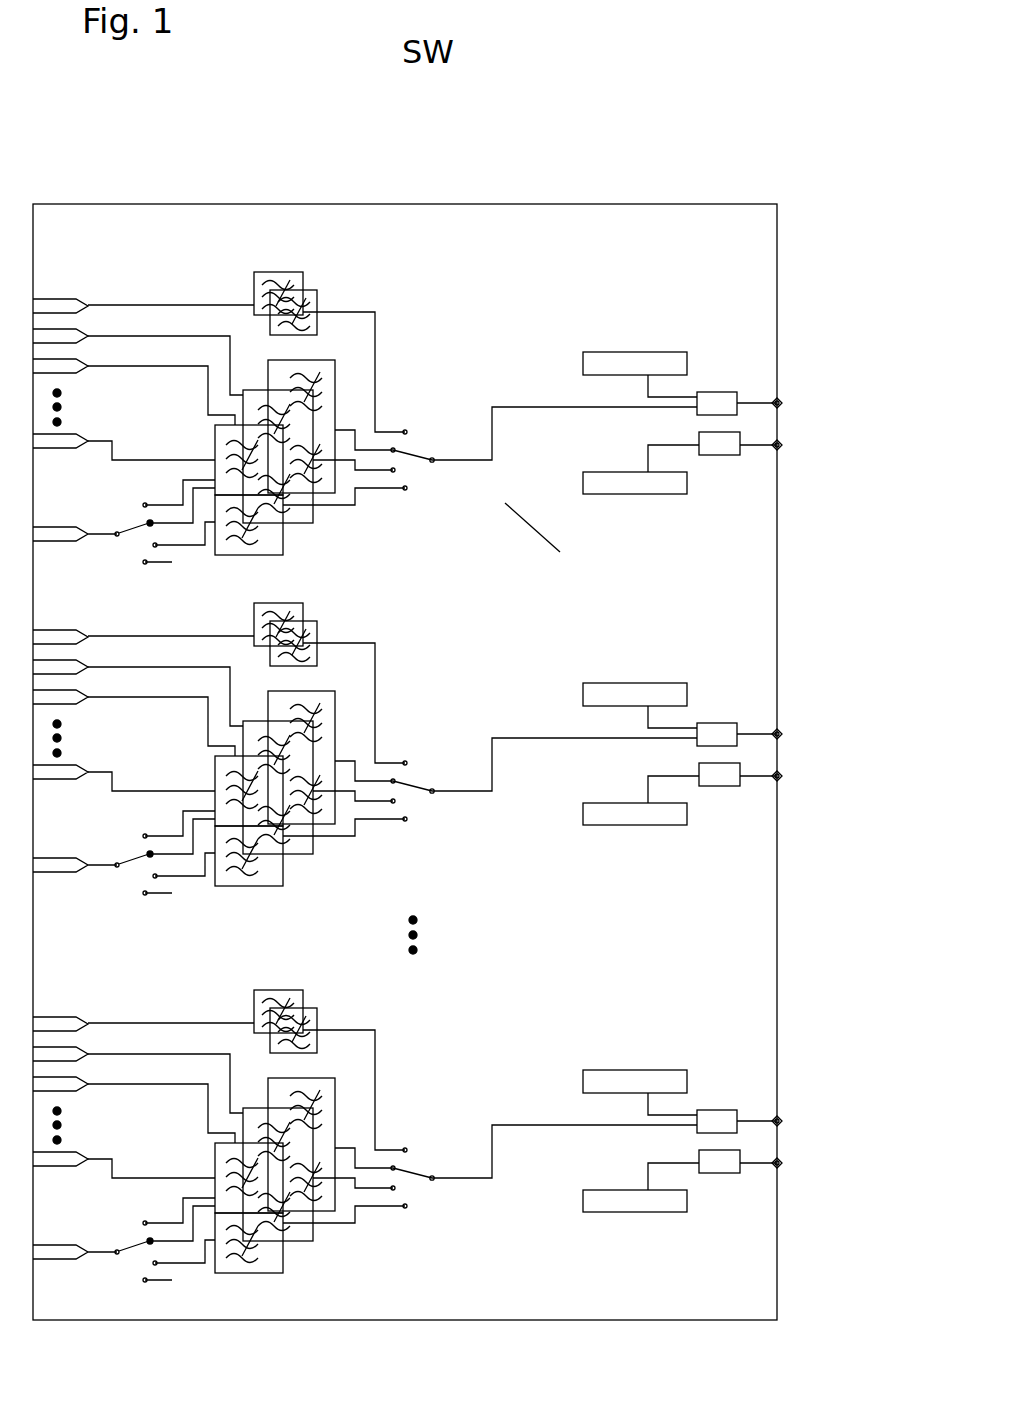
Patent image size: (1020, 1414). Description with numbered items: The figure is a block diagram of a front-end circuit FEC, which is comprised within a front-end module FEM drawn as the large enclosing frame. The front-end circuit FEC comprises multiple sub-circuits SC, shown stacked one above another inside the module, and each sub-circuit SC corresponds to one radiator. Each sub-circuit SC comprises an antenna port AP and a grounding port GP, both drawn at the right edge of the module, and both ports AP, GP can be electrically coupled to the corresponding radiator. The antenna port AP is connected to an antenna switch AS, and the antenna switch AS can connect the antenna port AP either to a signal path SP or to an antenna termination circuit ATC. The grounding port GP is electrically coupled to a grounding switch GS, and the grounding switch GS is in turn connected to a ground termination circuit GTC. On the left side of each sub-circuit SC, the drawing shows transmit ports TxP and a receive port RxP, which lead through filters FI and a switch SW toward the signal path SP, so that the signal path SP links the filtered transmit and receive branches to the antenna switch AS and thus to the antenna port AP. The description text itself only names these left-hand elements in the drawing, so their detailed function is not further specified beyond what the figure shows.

The receive port RxP is at (48, 532).
The transmit port TxP is at (72, 297).
The filter FI is at (283, 286).
The switch SW is at (412, 444).
The signal path SP is at (523, 406).
The antenna termination circuit ATC is at (612, 363).
The antenna switch AS is at (713, 405).
The front-end module FEM is at (771, 202).
The antenna port AP is at (782, 402).
The grounding port GP is at (782, 445).
The grounding switch GS is at (718, 446).
The ground termination circuit GTC is at (652, 487).
The sub-circuit SC is at (560, 552).
The front-end circuit FEC is at (284, 146).